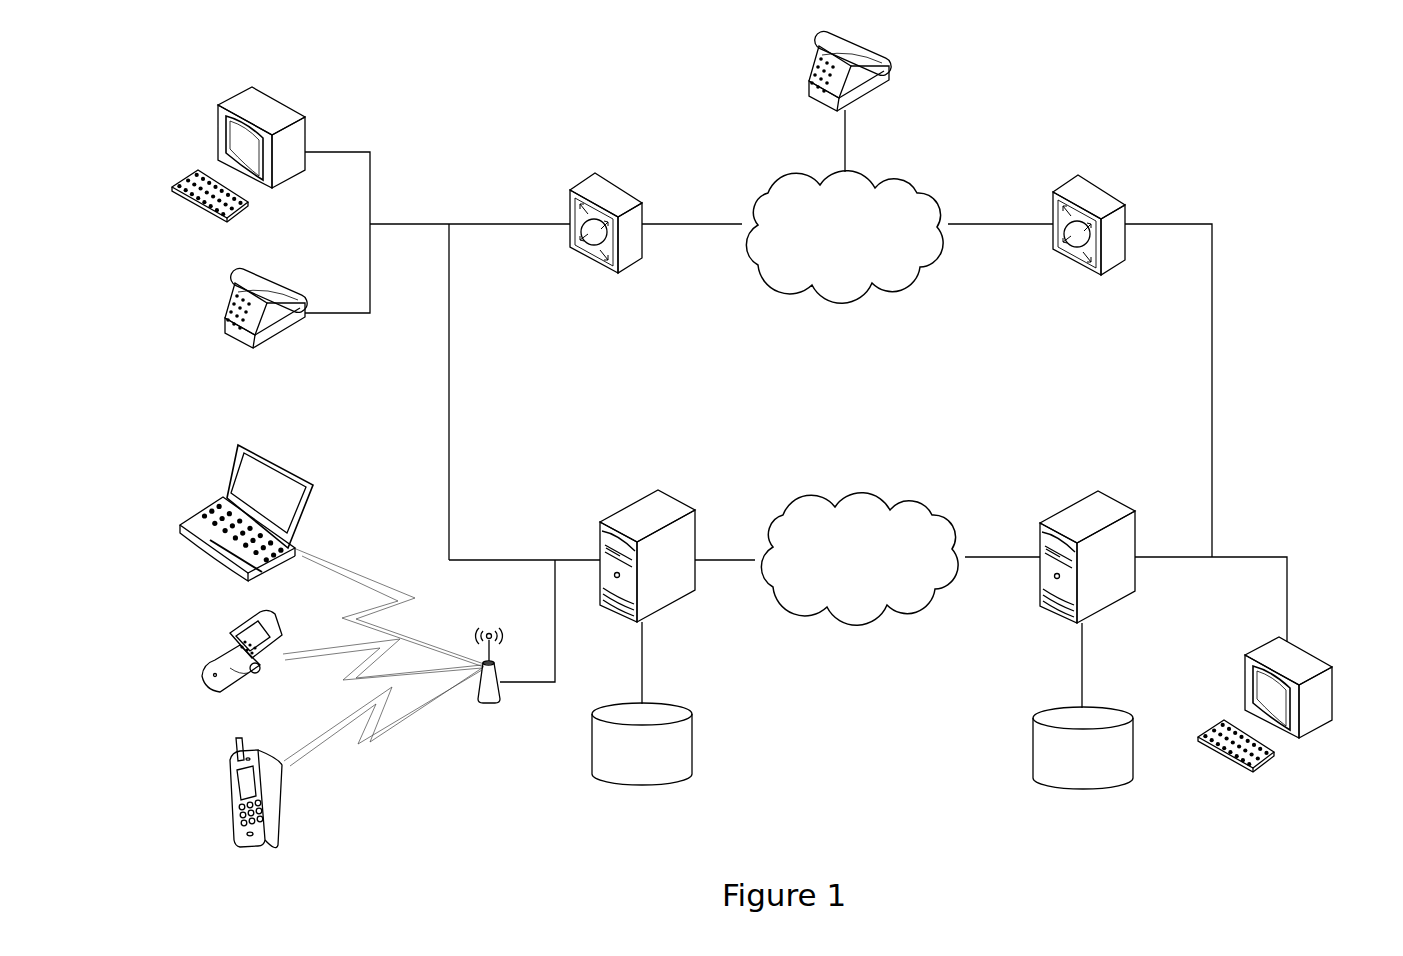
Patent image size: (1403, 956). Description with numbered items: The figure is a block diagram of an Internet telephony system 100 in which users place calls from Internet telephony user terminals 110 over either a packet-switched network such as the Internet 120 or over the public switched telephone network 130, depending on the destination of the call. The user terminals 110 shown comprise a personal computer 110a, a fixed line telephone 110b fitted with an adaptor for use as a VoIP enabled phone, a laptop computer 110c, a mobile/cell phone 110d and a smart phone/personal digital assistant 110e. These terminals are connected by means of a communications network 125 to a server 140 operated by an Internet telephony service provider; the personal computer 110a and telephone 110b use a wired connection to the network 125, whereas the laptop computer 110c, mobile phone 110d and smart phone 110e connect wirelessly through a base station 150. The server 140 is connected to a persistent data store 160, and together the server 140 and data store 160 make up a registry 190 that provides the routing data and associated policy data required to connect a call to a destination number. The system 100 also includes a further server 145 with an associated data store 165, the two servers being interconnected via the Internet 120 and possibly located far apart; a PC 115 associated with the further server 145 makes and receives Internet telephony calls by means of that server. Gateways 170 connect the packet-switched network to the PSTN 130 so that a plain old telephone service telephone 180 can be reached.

The Internet telephony system 100 is at (1227, 180).
The Internet telephony user terminals 110 is at (333, 350).
The personal computer 110a is at (220, 132).
The fixed line telephone 110b is at (220, 300).
The laptop computer 110c is at (222, 503).
The mobile/cell phone 110d is at (227, 652).
The smart phone/personal digital assistant 110e is at (230, 785).
The PC 115 is at (1253, 650).
The Internet 120 is at (788, 508).
The communications network 125 is at (482, 222).
The public switched telephone network 130 is at (760, 195).
The server 140 is at (625, 508).
The further server 145 is at (1065, 507).
The base station 150 is at (478, 705).
The persistent data store 160 is at (592, 755).
The data store 165 is at (1033, 760).
The gateway 170 is at (582, 185).
The plain old telephone service telephone 180 is at (813, 77).
The registry 190 is at (707, 465).